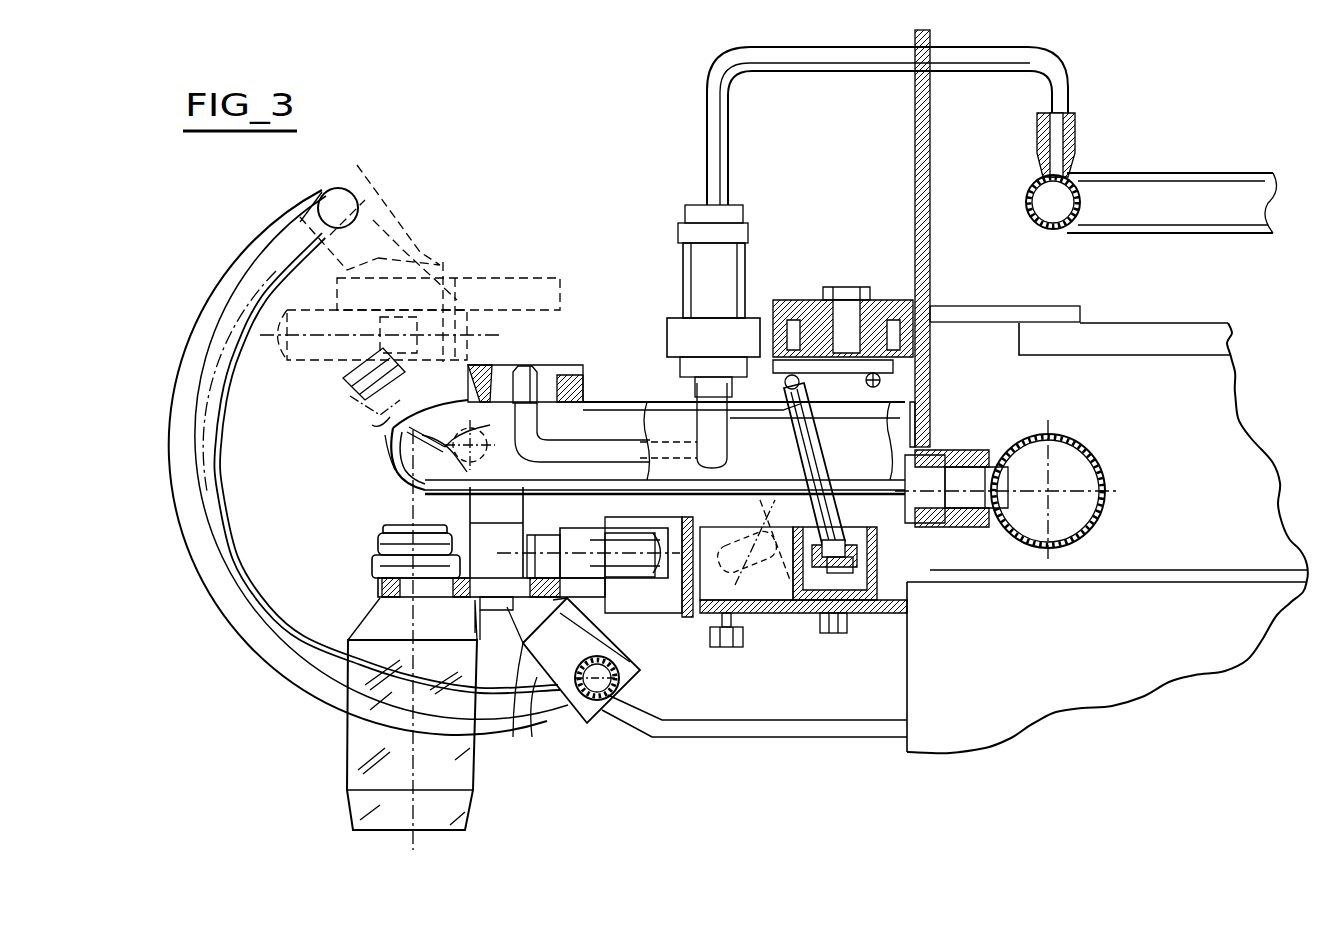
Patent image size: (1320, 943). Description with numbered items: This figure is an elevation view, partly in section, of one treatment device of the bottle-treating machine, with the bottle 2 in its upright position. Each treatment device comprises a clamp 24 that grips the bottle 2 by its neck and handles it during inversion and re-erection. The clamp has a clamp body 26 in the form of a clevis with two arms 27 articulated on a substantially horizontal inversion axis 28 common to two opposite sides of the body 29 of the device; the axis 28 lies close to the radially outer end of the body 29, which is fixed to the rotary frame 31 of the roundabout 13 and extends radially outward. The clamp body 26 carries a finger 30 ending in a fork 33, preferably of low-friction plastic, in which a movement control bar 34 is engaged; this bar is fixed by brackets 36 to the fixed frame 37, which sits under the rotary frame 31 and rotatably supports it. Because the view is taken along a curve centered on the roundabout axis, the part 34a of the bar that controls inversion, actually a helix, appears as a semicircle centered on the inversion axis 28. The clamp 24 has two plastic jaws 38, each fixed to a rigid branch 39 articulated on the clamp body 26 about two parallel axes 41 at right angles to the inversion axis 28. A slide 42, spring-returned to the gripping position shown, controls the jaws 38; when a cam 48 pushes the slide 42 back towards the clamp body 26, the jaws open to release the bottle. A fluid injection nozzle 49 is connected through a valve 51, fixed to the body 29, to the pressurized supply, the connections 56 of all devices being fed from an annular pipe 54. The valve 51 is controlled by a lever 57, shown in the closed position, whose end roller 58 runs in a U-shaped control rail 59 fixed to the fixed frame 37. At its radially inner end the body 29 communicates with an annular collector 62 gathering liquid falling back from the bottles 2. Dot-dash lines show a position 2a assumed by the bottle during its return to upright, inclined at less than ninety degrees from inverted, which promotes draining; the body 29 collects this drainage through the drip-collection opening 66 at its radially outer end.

The bottle 2 is at (467, 765).
The position of the bottle 2a is at (350, 393).
The roundabout 13 is at (903, 138).
The clamp 24 is at (490, 627).
The clamp body 26 is at (413, 533).
The arms 27 is at (480, 510).
The inversion axis 28 is at (455, 422).
The body 29 is at (390, 470).
The finger 30 is at (520, 713).
The rotary frame 31 is at (918, 192).
The fork 33 is at (562, 707).
The movement control bar 34 is at (603, 702).
The part of the bar 34a is at (190, 497).
The brackets 36 is at (752, 735).
The fixed frame 37 is at (907, 687).
The jaws 38 is at (380, 573).
The branches 39 is at (452, 597).
The axes 41 is at (387, 557).
The slide 42 is at (590, 540).
The cam 48 is at (690, 597).
The fluid injection nozzle 49 is at (553, 365).
The valve 51 is at (761, 270).
The annular pipe 54 is at (1030, 217).
The connections 56 is at (818, 62).
The lever 57 is at (838, 522).
The roller 58 is at (810, 613).
The control rail 59 is at (883, 600).
The annular collector 62 is at (1105, 510).
The drip-collection opening 66 is at (390, 417).